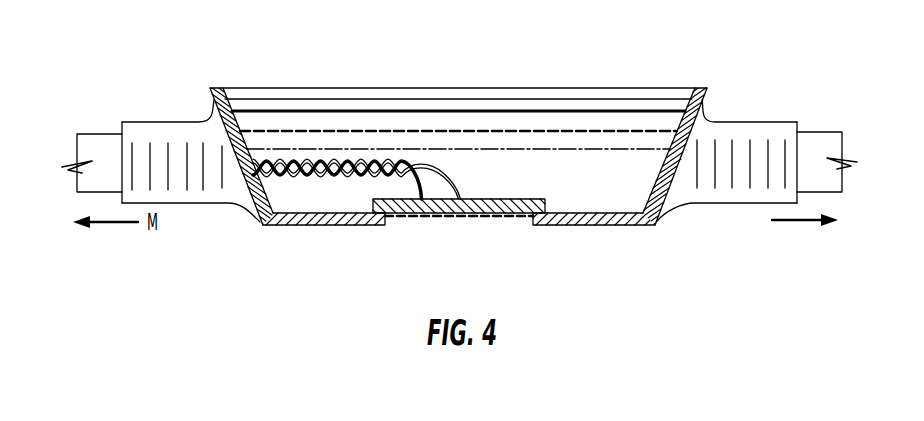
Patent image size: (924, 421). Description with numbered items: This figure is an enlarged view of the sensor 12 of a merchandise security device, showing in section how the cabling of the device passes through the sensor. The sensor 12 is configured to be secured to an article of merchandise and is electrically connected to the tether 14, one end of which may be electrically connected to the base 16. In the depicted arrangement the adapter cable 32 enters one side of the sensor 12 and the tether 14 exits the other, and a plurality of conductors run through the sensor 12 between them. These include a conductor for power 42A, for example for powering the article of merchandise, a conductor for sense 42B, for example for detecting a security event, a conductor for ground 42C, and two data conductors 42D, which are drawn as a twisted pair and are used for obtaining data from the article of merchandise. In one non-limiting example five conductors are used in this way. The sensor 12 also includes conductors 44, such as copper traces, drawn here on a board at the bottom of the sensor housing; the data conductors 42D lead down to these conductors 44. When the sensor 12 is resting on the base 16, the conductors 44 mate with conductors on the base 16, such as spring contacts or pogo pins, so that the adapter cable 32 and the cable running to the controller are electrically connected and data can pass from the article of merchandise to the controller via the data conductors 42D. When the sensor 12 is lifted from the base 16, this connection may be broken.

The sensor 12 is at (204, 77).
The tether 14 is at (823, 124).
The base 16 is at (793, 224).
The adapter cable 32 is at (92, 126).
The power conductor 42A is at (565, 129).
The sense conductor 42B is at (503, 148).
The ground conductor 42C is at (613, 110).
The data conductors 42D is at (347, 176).
The conductors 44 is at (490, 216).